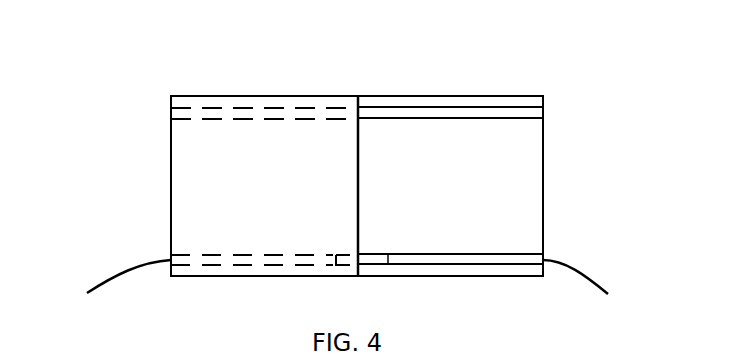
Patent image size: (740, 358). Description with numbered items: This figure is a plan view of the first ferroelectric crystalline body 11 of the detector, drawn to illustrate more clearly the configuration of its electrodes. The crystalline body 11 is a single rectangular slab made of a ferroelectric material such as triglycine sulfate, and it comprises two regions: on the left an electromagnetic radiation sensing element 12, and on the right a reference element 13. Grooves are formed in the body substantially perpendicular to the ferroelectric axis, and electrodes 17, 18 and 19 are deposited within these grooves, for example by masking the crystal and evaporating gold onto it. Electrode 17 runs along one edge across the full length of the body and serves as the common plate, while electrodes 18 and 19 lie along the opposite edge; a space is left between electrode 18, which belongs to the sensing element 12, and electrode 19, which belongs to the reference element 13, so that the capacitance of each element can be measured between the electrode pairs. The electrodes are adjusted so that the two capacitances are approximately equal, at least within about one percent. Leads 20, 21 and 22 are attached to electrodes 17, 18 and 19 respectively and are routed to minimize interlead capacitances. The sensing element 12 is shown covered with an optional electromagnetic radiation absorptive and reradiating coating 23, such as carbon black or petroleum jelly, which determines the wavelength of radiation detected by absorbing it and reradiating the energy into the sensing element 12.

The first ferroelectric crystalline body 11 is at (167, 283).
The electromagnetic radiation sensing element 12 is at (238, 151).
The reference element 13 is at (545, 80).
The electrode 17 is at (543, 117).
The electrode 18 is at (171, 256).
The electrode 19 is at (543, 255).
The lead 20 is at (368, 120).
The lead 21 is at (94, 288).
The lead 22 is at (597, 279).
The electromagnetic radiation absorptive and reradiating coating 23 is at (237, 186).